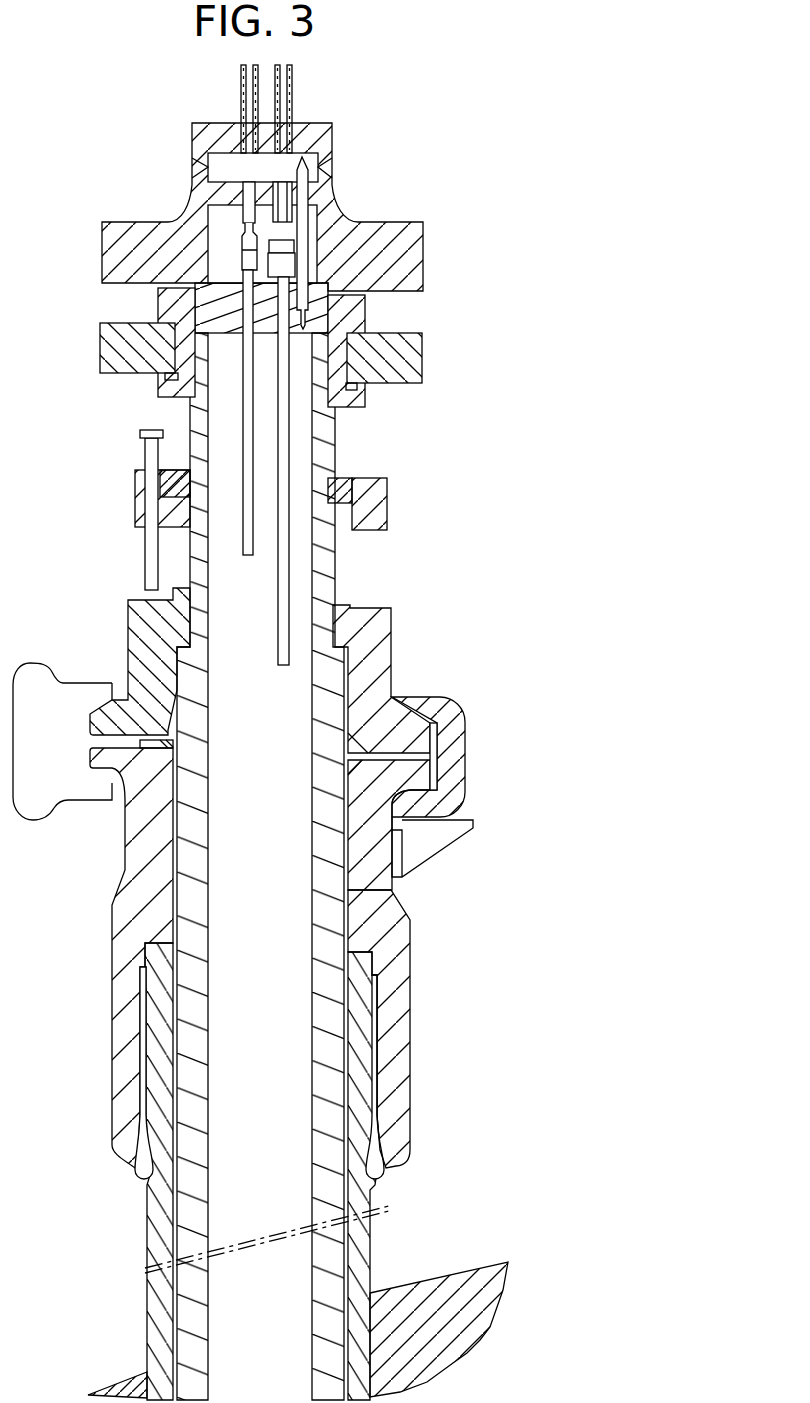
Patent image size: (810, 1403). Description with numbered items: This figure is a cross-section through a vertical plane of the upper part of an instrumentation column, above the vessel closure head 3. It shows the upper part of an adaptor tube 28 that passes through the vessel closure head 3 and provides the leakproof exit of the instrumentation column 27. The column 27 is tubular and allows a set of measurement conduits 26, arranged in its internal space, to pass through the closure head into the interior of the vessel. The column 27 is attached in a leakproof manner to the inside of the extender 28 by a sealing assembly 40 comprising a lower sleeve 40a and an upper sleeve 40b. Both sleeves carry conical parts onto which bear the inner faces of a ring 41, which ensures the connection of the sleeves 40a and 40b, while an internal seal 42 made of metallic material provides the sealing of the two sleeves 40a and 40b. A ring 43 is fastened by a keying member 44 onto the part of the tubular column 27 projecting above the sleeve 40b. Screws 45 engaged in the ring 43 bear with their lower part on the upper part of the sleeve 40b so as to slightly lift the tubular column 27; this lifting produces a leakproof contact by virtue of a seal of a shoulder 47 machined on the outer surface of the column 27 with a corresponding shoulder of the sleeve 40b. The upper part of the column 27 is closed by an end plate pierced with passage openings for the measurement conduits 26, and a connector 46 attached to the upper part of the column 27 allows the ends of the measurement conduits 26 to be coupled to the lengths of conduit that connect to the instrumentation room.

The vessel closure head 3 is at (477, 1287).
The measurement conduits 26 is at (284, 462).
The instrumentation column 27 is at (193, 853).
The adaptor tube 28 is at (152, 1224).
The sealing assembly 40 is at (481, 708).
The lower sleeve 40a is at (397, 977).
The upper sleeve 40b is at (360, 609).
The ring 41 is at (468, 758).
The internal seal 42 is at (112, 765).
The ring 43 is at (378, 508).
The keying member 44 is at (352, 492).
The screws 45 is at (145, 556).
The connector 46 is at (380, 192).
The shoulder 47 is at (172, 631).